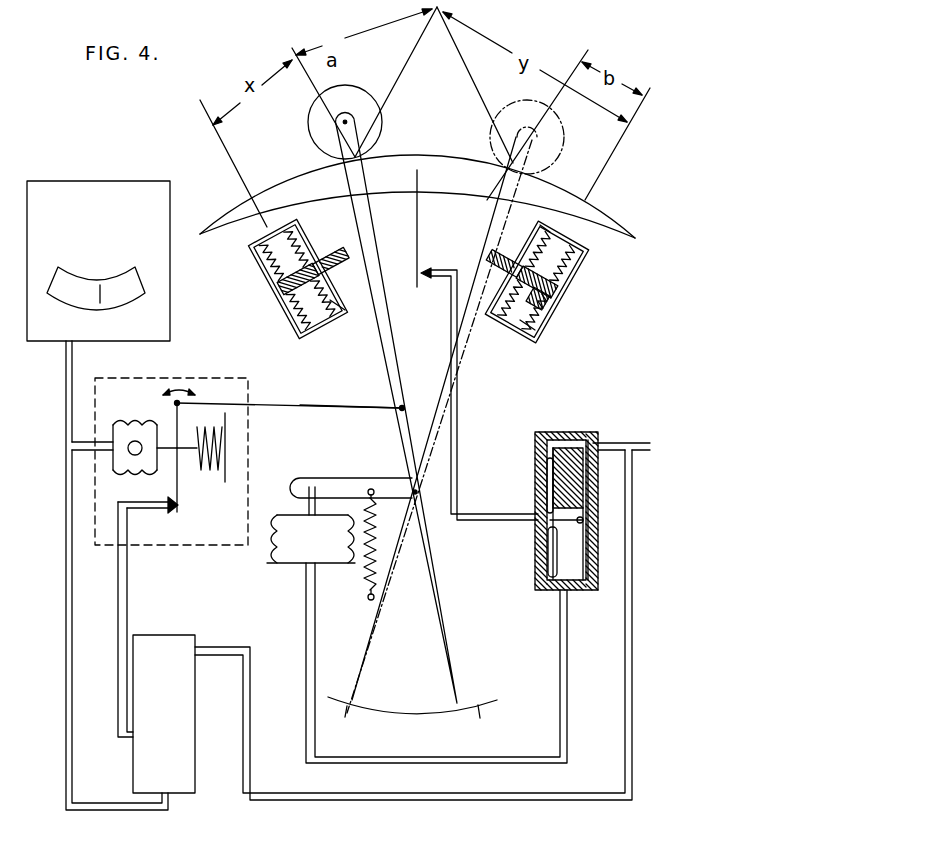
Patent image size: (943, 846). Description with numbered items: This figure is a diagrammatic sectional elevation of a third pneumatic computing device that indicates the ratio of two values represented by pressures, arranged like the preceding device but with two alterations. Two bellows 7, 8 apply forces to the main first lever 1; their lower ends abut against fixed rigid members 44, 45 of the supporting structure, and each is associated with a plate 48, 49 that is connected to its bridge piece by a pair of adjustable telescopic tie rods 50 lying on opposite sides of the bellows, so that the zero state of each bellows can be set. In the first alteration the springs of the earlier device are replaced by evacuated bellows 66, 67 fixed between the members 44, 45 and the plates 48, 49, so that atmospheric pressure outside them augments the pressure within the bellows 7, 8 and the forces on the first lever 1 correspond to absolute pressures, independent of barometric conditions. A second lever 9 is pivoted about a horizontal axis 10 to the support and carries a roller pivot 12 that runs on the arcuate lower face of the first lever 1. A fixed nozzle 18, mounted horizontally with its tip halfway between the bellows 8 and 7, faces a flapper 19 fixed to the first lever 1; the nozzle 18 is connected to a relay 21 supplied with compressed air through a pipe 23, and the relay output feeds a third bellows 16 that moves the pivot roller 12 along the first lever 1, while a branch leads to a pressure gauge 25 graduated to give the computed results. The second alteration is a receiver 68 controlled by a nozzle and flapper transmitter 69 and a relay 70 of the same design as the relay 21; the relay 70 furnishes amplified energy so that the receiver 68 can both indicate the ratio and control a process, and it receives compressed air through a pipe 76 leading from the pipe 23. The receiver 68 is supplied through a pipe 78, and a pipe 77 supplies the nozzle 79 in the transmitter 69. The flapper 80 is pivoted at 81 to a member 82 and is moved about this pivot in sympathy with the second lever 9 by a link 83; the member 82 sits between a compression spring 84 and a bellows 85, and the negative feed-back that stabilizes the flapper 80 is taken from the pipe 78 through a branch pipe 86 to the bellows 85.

The first lever 1 is at (428, 162).
The bellows 7 is at (278, 253).
The bellows 8 is at (592, 257).
The second lever 9 is at (397, 393).
The horizontal axis 10 is at (420, 490).
The roller pivot 12 is at (355, 102).
The third bellows 16 is at (302, 548).
The nozzle 18 is at (428, 283).
The flapper 19 is at (418, 247).
The relay 21 is at (535, 575).
The pipe 23 is at (632, 443).
The pressure gauge 25 is at (365, 578).
The fixed rigid member 44 is at (275, 275).
The fixed rigid member 45 is at (563, 292).
The plate 48 is at (322, 328).
The plate 49 is at (510, 330).
The tie rod 50 is at (352, 290).
The evacuated bellows 66 is at (313, 317).
The evacuated bellows 67 is at (555, 262).
The receiver 68 is at (93, 195).
The nozzle and flapper transmitter 69 is at (178, 476).
The relay 70 is at (143, 772).
The pipe 76 is at (497, 792).
The pipe 77 is at (128, 618).
The pipe 78 is at (66, 606).
The nozzle 79 is at (167, 514).
The flapper 80 is at (180, 490).
The pivot 81 is at (177, 432).
The member 82 is at (167, 452).
The link 83 is at (343, 410).
The compression spring 84 is at (225, 418).
The bellows 85 is at (113, 432).
The branch pipe 86 is at (85, 452).